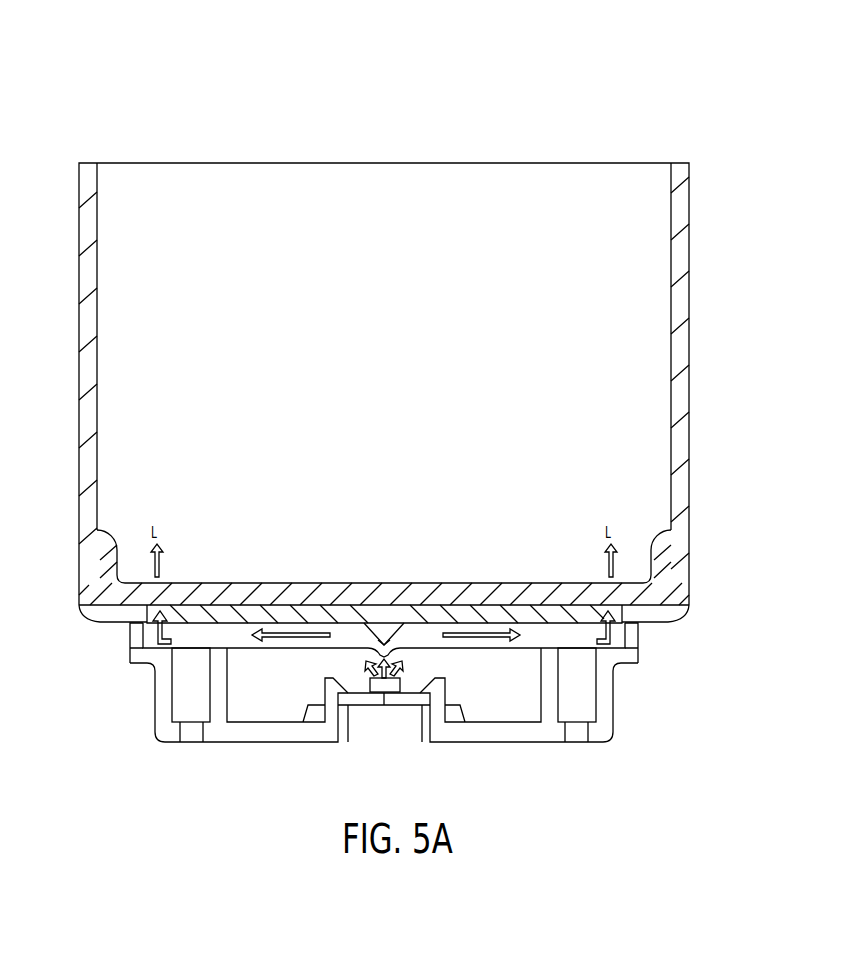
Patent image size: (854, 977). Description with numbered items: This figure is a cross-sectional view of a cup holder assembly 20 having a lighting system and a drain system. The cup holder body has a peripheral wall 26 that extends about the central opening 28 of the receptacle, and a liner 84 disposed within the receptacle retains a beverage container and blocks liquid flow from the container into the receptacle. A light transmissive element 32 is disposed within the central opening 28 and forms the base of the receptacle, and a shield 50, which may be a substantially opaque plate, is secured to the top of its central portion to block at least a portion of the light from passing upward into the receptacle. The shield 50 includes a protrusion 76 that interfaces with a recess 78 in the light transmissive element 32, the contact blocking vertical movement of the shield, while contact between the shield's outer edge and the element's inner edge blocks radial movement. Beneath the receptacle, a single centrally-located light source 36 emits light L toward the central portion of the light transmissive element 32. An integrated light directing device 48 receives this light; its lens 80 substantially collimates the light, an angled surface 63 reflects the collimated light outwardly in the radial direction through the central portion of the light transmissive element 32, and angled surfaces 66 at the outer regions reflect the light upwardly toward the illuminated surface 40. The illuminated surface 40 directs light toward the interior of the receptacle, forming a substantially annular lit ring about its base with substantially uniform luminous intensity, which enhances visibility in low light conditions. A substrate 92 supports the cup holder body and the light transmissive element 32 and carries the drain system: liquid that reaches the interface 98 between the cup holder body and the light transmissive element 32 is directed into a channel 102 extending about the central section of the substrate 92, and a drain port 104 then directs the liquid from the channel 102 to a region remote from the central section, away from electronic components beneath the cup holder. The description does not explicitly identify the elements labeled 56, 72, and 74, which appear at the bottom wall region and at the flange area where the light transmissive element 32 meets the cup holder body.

The cup holder assembly 20 is at (181, 104).
The peripheral wall 26 is at (692, 435).
The central opening 28 is at (435, 187).
The light transmissive element 32 is at (521, 650).
The light source 36 is at (388, 724).
The illuminated surface 40 is at (163, 622).
The light directing device 48 is at (381, 634).
The shield 50 is at (404, 622).
The bottom wall 56 is at (483, 538).
The angled surface 63 is at (391, 632).
The angled surface 66 is at (162, 650).
The flange 72 is at (150, 626).
The rim 74 is at (140, 632).
The protrusion 76 is at (172, 615).
The recess 78 is at (612, 610).
The lens 80 is at (398, 648).
The liner 84 is at (118, 543).
The substrate 92 is at (265, 730).
The interface 98 is at (135, 617).
The channel 102 is at (180, 707).
The drain port 104 is at (192, 736).